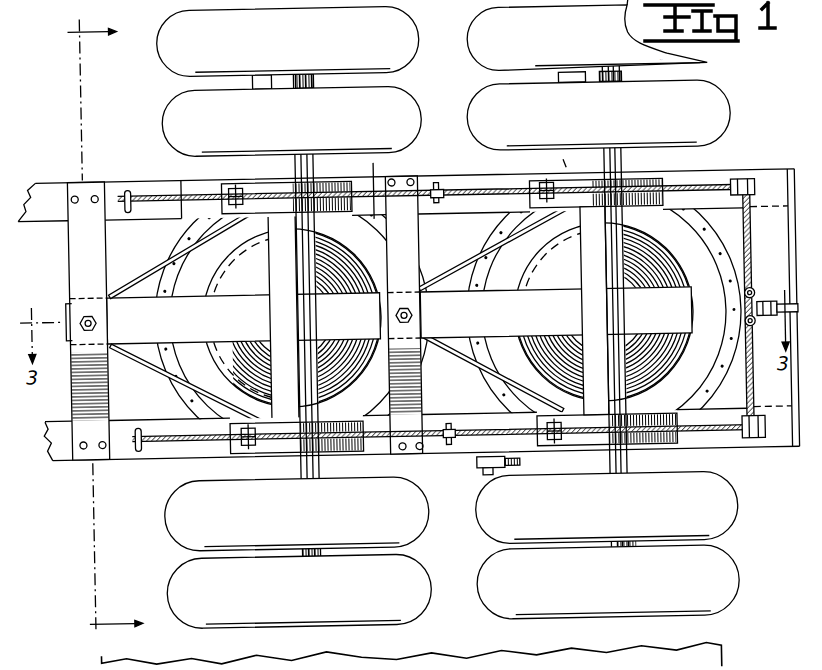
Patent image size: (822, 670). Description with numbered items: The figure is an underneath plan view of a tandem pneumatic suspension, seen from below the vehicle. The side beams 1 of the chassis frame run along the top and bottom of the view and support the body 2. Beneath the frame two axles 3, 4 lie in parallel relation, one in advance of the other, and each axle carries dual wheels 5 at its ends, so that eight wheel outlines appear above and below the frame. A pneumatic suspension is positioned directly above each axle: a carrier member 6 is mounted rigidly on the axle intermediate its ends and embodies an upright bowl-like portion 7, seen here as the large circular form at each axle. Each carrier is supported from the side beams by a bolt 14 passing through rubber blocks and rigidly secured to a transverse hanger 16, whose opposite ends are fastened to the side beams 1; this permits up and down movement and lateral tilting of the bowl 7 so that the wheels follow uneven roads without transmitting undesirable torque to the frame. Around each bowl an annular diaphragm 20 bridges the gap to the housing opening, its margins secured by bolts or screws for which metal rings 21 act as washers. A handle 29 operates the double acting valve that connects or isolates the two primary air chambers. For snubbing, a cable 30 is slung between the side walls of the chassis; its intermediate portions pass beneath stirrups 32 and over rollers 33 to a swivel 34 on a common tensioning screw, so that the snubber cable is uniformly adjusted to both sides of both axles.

The side beams of the chassis frame 1 is at (47, 186).
The body 2 is at (114, 328).
The axle 3 is at (281, 303).
The axle 4 is at (182, 218).
The dual wheels 5 is at (447, 314).
The carrier member 6 is at (214, 362).
The bowl-like portion 7 is at (665, 356).
The bolt 14 is at (98, 316).
The transverse hanger 16 is at (243, 318).
The annular diaphragm 20 is at (447, 314).
The metal rings 21 is at (479, 259).
The handle 29 is at (469, 468).
The cable 30 is at (476, 191).
The stirrups 32 is at (258, 184).
The rollers 33 is at (433, 192).
The swivel 34 is at (790, 297).